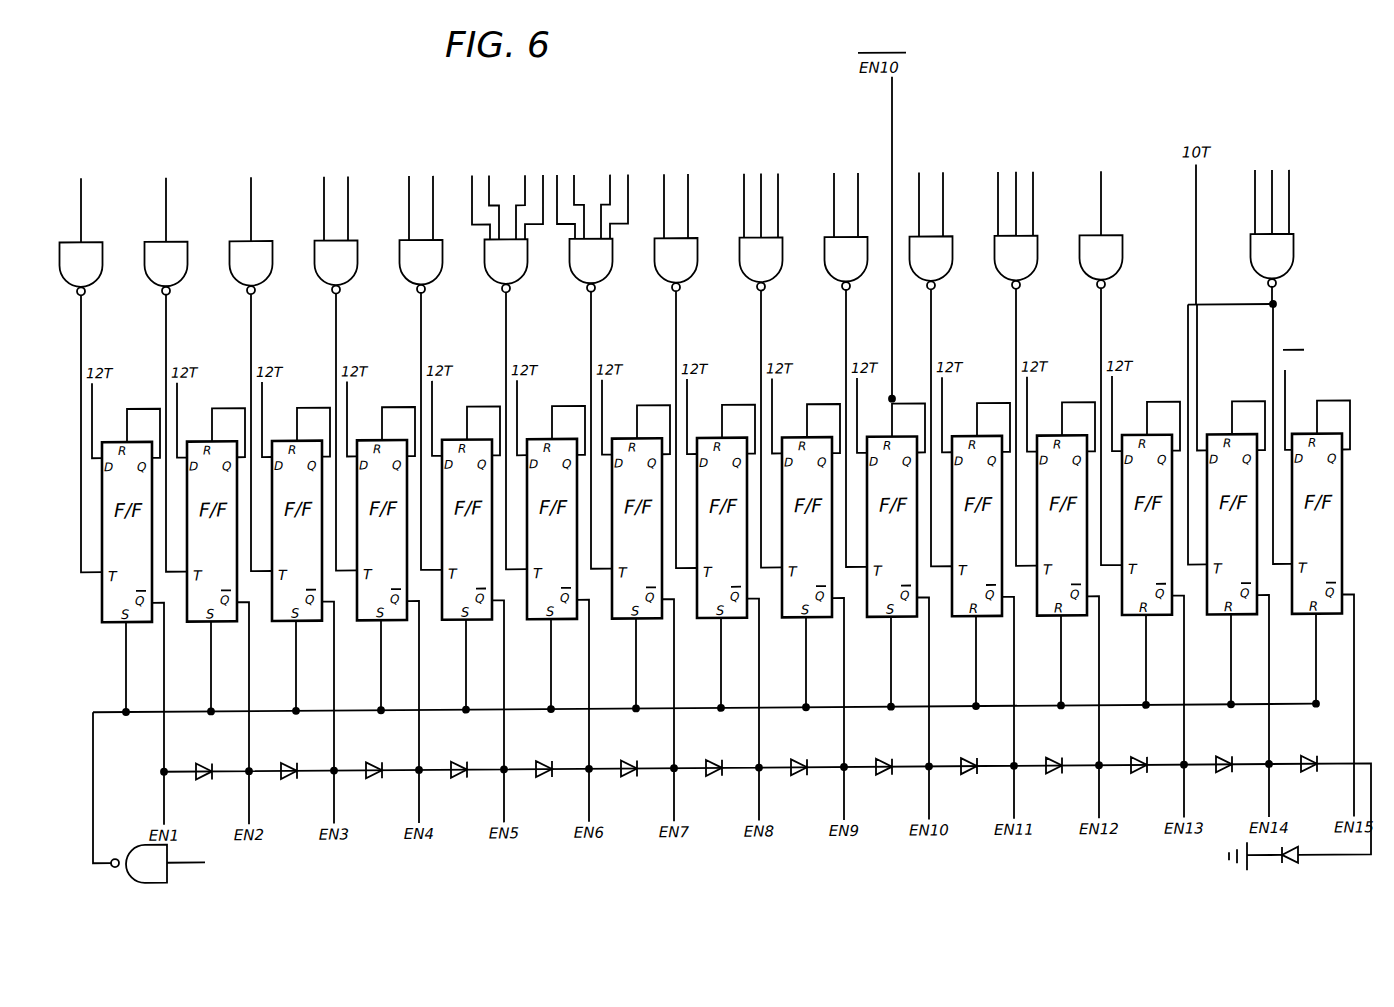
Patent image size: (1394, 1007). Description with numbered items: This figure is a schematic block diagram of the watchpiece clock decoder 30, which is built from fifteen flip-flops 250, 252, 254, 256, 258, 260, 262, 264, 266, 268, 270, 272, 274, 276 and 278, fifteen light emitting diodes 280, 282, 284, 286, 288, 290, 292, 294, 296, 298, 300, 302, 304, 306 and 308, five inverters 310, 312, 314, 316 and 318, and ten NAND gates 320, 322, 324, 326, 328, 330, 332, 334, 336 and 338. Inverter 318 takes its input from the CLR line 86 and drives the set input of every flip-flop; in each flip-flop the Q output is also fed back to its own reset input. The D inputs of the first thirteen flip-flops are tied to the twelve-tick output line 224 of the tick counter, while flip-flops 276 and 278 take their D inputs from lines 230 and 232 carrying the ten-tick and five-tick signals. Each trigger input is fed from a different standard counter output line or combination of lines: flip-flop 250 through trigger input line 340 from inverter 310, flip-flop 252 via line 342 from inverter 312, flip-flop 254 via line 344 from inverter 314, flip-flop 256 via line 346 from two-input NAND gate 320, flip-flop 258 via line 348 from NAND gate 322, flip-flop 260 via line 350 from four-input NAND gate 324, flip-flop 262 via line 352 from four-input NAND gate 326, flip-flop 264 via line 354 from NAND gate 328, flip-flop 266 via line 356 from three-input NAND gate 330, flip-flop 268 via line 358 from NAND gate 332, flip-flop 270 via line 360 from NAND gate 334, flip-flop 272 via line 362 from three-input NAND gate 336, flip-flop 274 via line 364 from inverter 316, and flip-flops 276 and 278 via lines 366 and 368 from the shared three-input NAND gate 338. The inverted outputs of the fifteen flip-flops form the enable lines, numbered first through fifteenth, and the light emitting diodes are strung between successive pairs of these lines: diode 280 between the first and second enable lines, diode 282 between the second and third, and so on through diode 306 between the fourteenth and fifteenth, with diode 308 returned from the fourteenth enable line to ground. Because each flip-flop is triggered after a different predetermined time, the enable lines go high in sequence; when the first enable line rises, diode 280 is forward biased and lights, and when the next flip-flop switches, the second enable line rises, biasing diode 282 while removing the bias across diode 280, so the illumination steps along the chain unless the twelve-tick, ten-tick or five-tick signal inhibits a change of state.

The decoder 30 is at (636, 846).
The CLR line 86 is at (204, 863).
The output line of the tick counter 224 is at (96, 384).
The line of the tick counter 230 is at (1200, 349).
The line of the tick counter 232 is at (1288, 385).
The flip-flop 250 is at (108, 441).
The flip-flop 252 is at (193, 441).
The flip-flop 254 is at (278, 441).
The flip-flop 256 is at (363, 441).
The flip-flop 258 is at (448, 441).
The flip-flop 260 is at (533, 441).
The flip-flop 262 is at (618, 441).
The flip-flop 264 is at (703, 441).
The flip-flop 266 is at (788, 441).
The flip-flop 268 is at (877, 623).
The flip-flop 270 is at (958, 441).
The flip-flop 272 is at (1043, 441).
The flip-flop 274 is at (1128, 441).
The flip-flop 276 is at (1207, 441).
The flip-flop 278 is at (1300, 441).
The light emitting diode 280 is at (201, 764).
The light emitting diode 282 is at (295, 781).
The light emitting diode 284 is at (380, 781).
The light emitting diode 286 is at (465, 781).
The diode 288 is at (550, 781).
The diode 290 is at (635, 781).
The diode 292 is at (720, 781).
The diode 294 is at (805, 781).
The diode 296 is at (890, 781).
The diode 298 is at (975, 781).
The diode 300 is at (1060, 781).
The diode 302 is at (1145, 781).
The diode 304 is at (1230, 781).
The diode 306 is at (1315, 781).
The diode 308 is at (1291, 872).
The inverter 310 is at (93, 241).
The inverter 312 is at (178, 241).
The inverter 314 is at (253, 272).
The inverter 316 is at (1112, 241).
The inverter 318 is at (132, 878).
The NAND gate 320 is at (338, 272).
The NAND gate 322 is at (423, 272).
The NAND gate 324 is at (508, 272).
The NAND gate 326 is at (593, 272).
The NAND gate 328 is at (678, 272).
The NAND gate 330 is at (763, 272).
The NAND gate 332 is at (857, 268).
The NAND gate 334 is at (940, 268).
The NAND gate 336 is at (1025, 268).
The NAND gate 338 is at (1292, 253).
The trigger input line 340 is at (83, 330).
The line 342 is at (167, 323).
The line 344 is at (252, 337).
The line 346 is at (337, 337).
The line 348 is at (422, 337).
The line 350 is at (507, 337).
The line 352 is at (592, 337).
The line 354 is at (677, 337).
The line 356 is at (762, 326).
The line 358 is at (845, 346).
The line 360 is at (932, 337).
The line 362 is at (1017, 337).
The line 364 is at (1102, 333).
The line 366 is at (1250, 290).
The line 368 is at (1276, 327).